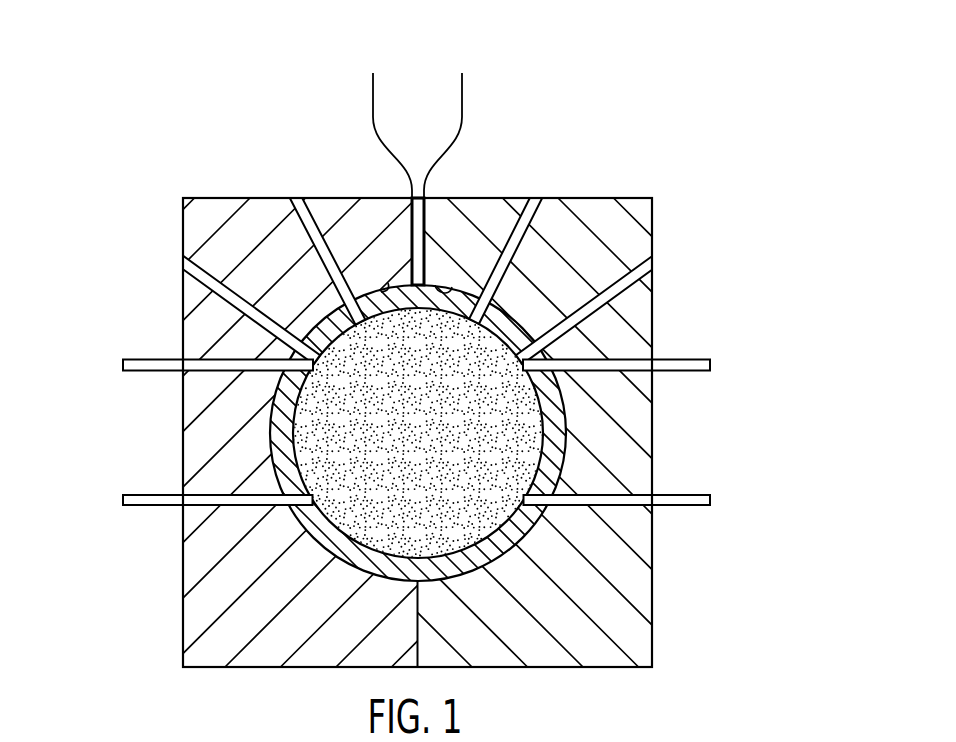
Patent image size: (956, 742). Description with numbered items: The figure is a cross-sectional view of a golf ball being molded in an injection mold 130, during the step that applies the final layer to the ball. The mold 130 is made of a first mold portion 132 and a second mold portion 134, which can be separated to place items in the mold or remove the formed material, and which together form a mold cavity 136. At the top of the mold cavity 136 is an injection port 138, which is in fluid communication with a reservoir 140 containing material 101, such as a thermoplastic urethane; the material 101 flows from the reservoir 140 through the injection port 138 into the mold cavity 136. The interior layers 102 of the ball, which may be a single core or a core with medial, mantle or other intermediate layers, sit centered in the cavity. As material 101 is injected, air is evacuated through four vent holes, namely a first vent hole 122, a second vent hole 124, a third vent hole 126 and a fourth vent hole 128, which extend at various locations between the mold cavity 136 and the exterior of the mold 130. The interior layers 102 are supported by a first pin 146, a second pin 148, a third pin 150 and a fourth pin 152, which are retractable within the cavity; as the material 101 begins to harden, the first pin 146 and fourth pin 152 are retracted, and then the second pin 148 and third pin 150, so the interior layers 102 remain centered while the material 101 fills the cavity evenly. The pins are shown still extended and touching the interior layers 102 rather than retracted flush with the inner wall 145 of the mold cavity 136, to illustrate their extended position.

The material 101 is at (451, 70).
The interior layers 102 is at (397, 412).
The first vent hole 122 is at (628, 285).
The second vent hole 124 is at (532, 212).
The third vent hole 126 is at (304, 222).
The fourth vent hole 128 is at (203, 279).
The mold 130 is at (694, 234).
The first mold portion 132 is at (600, 213).
The second mold portion 134 is at (211, 210).
The mold cavity 136 is at (271, 431).
The injection port 138 is at (452, 287).
The reservoir 140 is at (397, 117).
The inner wall 145 is at (388, 283).
The first pin 146 is at (712, 502).
The second pin 148 is at (712, 363).
The third pin 150 is at (123, 363).
The fourth pin 152 is at (123, 502).